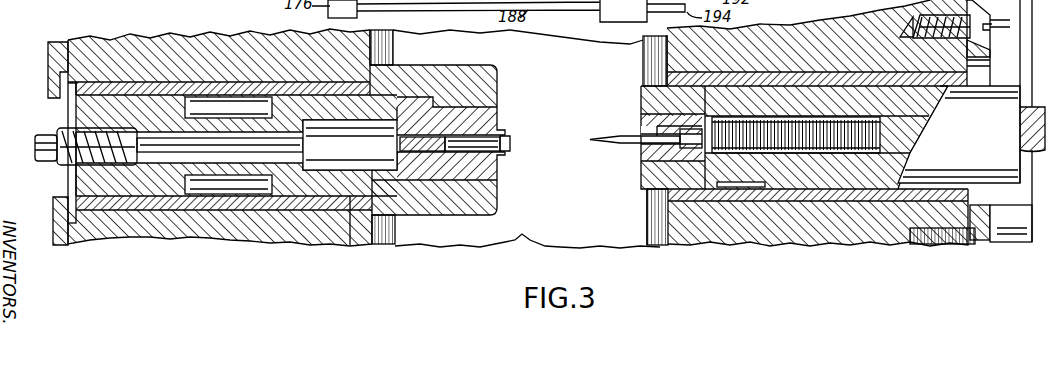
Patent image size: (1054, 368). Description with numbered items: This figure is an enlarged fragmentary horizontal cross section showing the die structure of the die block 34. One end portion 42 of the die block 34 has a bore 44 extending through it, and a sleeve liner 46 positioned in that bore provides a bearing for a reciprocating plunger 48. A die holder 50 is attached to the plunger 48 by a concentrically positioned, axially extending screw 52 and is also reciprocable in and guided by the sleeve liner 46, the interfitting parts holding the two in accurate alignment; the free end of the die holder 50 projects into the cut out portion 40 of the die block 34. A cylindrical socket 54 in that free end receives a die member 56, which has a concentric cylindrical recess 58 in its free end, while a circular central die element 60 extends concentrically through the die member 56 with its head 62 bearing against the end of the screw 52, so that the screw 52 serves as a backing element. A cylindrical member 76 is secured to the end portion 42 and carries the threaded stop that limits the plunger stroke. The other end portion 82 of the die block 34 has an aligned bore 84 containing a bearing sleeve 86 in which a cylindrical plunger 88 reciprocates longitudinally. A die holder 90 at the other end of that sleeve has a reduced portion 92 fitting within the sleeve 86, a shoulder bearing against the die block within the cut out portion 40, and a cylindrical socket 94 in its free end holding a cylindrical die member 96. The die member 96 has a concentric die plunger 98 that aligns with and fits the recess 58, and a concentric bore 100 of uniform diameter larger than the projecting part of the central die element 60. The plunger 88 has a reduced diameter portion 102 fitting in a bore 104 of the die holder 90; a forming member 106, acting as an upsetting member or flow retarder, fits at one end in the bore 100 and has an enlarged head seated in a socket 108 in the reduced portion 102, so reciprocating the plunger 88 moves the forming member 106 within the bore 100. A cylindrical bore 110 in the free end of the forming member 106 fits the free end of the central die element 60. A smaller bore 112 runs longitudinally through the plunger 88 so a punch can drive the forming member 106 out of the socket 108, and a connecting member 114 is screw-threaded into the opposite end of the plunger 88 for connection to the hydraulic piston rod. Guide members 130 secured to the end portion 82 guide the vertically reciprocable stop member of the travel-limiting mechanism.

The die block 34 is at (442, 258).
The cut out portion 40 is at (380, 244).
The end portion 42 is at (838, 240).
The bore 44 is at (877, 195).
The sleeve liner 46 is at (745, 200).
The plunger 48 is at (1010, 178).
The die holder 50 is at (650, 185).
The screw 52 is at (780, 154).
The cylindrical socket 54 is at (643, 160).
The die member 56 is at (641, 124).
The cylindrical recess 58 is at (643, 148).
The central die element 60 is at (620, 137).
The head 62 is at (706, 120).
The cylindrical member 76 is at (1005, 240).
The end portion 82 is at (238, 238).
The bore 84 is at (313, 200).
The bearing sleeve 86 is at (157, 205).
The plunger 88 is at (127, 195).
The die holder 90 is at (483, 215).
The reduced portion 92 is at (355, 195).
The cylindrical socket 94 is at (473, 107).
The die member 96 is at (470, 168).
The die plunger 98 is at (505, 146).
The bore 100 is at (503, 138).
The reduced diameter portion 102 is at (213, 165).
The bore 104 is at (370, 122).
The forming member 106 is at (272, 186).
The socket 108 is at (272, 117).
The cylindrical bore 110 is at (440, 136).
The bore 112 is at (222, 126).
The connecting member 114 is at (57, 140).
The guide members 130 is at (48, 72).